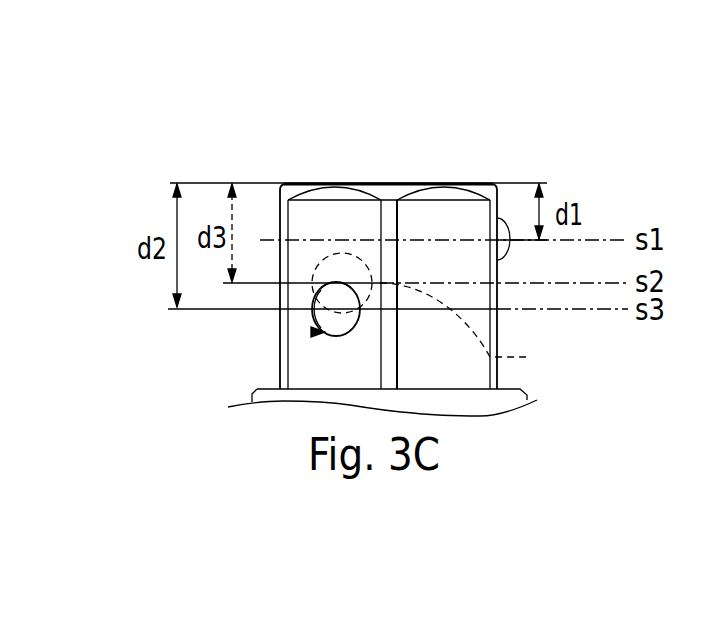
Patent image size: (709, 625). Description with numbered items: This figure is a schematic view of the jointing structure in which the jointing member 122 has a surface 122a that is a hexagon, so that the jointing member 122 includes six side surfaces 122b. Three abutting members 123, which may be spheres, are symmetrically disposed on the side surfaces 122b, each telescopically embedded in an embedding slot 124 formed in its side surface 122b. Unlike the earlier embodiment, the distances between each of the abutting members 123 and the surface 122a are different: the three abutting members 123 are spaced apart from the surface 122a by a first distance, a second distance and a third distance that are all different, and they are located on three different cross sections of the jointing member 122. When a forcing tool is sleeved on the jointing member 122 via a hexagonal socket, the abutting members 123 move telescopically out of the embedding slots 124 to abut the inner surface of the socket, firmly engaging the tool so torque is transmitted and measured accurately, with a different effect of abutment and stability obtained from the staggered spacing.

The jointing member 122 is at (387, 70).
The surface 122a is at (403, 183).
The side surfaces 122b is at (280, 220).
The abutting members 123 is at (510, 228).
The embedding slot 124 is at (313, 333).